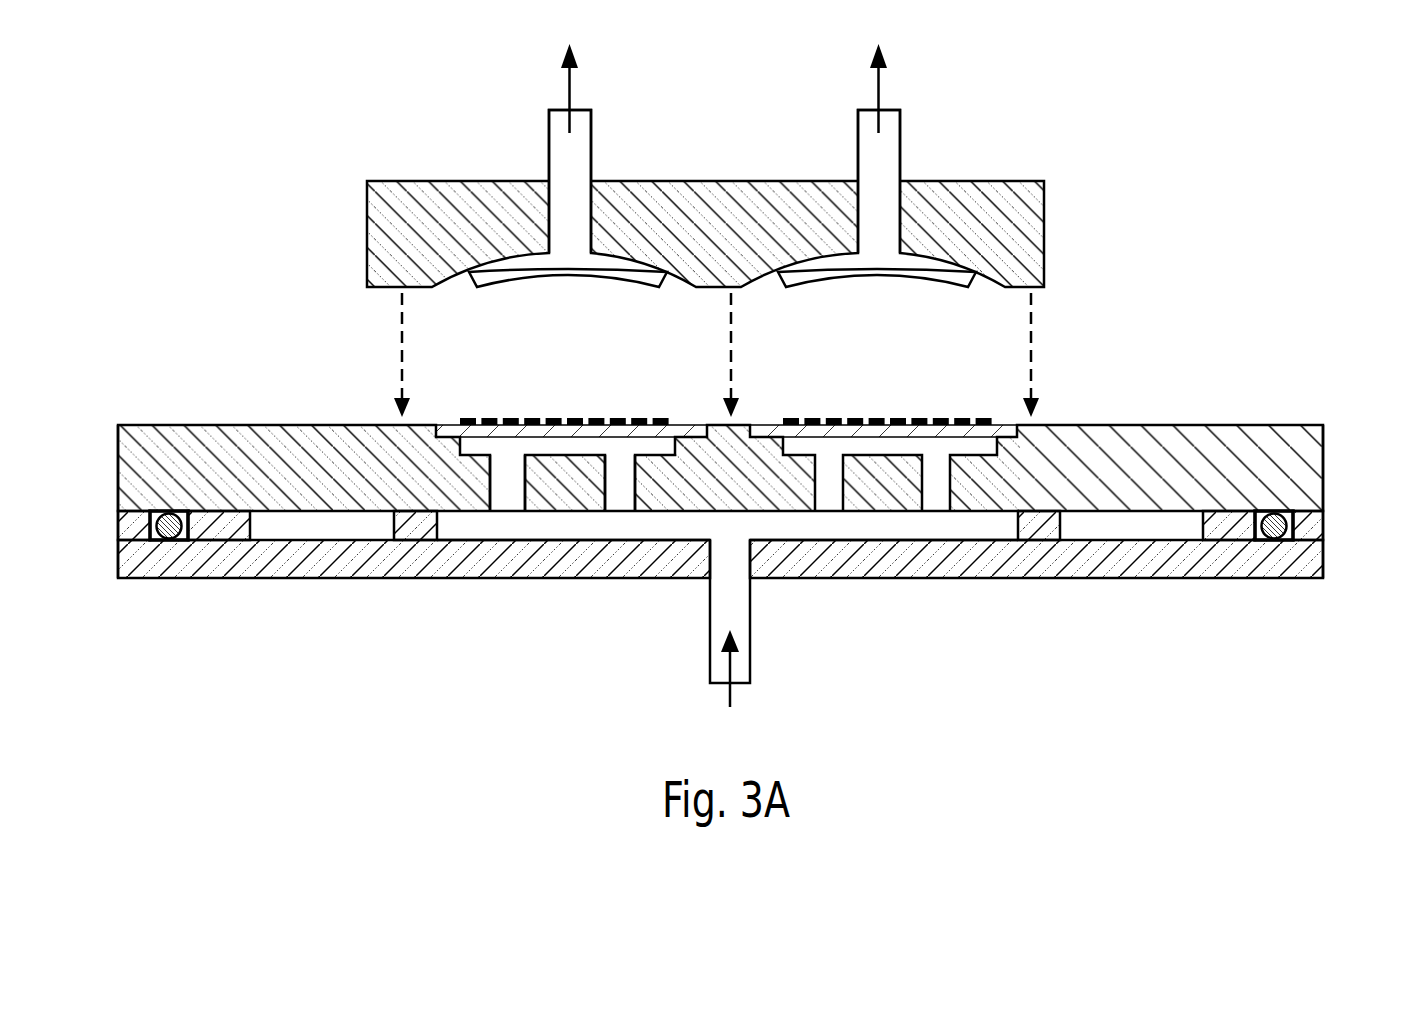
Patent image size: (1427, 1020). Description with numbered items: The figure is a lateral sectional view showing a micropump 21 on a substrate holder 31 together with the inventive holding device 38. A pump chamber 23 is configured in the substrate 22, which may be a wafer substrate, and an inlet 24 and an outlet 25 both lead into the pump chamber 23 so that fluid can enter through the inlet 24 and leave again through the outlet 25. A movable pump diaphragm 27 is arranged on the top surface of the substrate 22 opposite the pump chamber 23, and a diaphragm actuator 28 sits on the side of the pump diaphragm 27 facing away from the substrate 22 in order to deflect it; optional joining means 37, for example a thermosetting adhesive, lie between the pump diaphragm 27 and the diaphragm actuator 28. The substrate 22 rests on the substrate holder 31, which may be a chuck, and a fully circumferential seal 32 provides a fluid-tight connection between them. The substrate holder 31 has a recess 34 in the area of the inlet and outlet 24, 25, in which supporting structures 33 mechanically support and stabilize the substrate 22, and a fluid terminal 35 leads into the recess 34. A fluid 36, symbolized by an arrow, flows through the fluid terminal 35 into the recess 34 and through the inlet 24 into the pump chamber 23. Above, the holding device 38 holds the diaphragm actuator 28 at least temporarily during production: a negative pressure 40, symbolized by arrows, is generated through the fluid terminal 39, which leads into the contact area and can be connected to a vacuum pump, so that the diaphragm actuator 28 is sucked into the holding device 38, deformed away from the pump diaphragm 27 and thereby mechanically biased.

The micropump 21 is at (509, 400).
The substrate 22 is at (1143, 425).
The pump chamber 23 is at (548, 440).
The inlet 24 is at (509, 488).
The outlet 25 is at (621, 488).
The pump diaphragm 27 is at (872, 430).
The diaphragm actuator 28 is at (627, 270).
The substrate holder 31 is at (1222, 557).
The seal 32 is at (166, 528).
The supporting structures 33 is at (418, 525).
The recess 34 is at (770, 532).
The fluid terminal 35 is at (708, 665).
The fluid 36 is at (732, 700).
The joining means 37 is at (612, 420).
The holding device 38 is at (430, 213).
The fluid terminal 39 is at (548, 120).
The negative pressure 40 is at (572, 90).